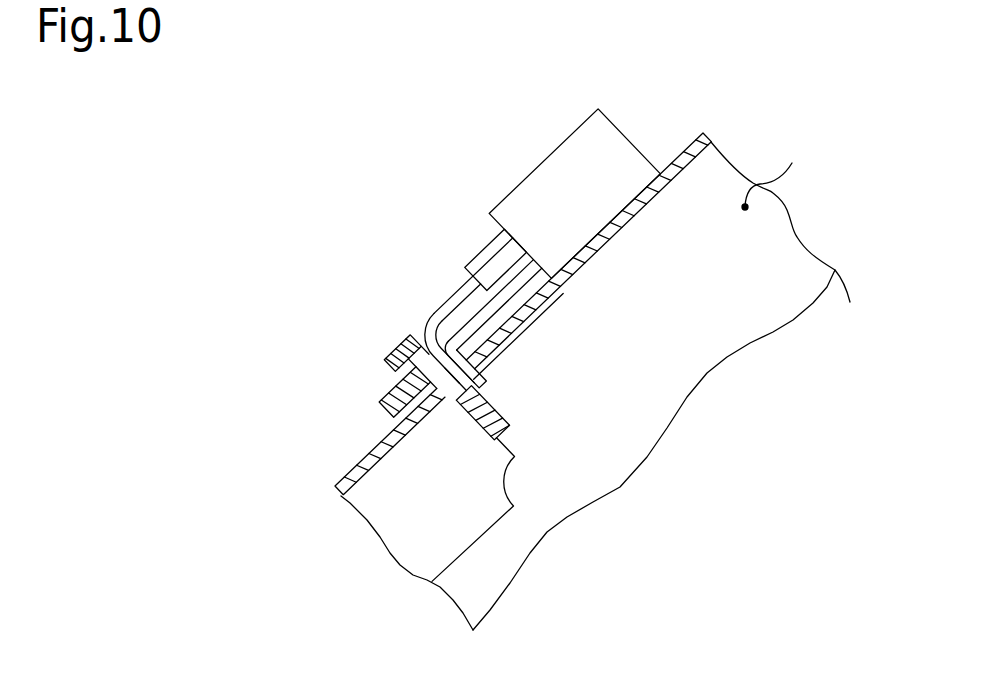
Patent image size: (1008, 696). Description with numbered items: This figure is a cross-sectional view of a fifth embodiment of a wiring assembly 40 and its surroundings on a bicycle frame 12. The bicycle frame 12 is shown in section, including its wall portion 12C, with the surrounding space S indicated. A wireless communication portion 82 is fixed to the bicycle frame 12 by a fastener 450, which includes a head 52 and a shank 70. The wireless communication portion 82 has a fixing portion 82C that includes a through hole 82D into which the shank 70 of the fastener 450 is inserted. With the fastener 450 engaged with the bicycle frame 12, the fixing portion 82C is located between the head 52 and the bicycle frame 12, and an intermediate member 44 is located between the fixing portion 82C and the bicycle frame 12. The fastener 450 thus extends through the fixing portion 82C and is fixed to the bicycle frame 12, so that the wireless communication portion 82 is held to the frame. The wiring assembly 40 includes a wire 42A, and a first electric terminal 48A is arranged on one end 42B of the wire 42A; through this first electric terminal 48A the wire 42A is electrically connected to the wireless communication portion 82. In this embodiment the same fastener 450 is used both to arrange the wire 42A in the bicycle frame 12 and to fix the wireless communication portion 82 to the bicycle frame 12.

The bicycle frame 12 is at (890, 332).
The flange of panel 12C is at (684, 149).
The space S is at (770, 171).
The wireless communication portion 82 is at (598, 108).
The fixing portion 82C is at (543, 312).
The through hole 82D is at (483, 382).
The first electric terminal 48A is at (478, 254).
The one end of the wire 42B is at (457, 290).
The wire 42A is at (463, 552).
The shank 70 is at (514, 411).
The intermediate member 44 is at (430, 413).
The head 52 is at (389, 354).
The wiring assembly 40 is at (300, 283).
The fastener 450 is at (357, 358).